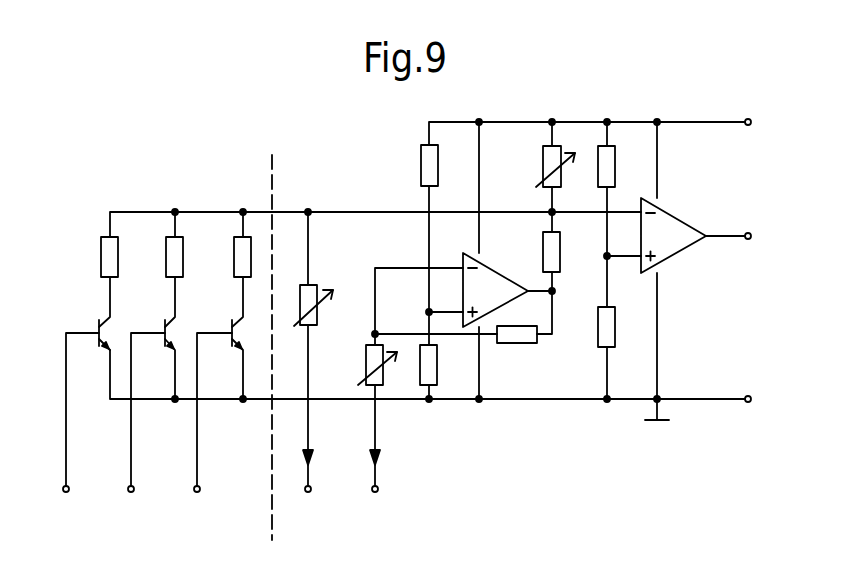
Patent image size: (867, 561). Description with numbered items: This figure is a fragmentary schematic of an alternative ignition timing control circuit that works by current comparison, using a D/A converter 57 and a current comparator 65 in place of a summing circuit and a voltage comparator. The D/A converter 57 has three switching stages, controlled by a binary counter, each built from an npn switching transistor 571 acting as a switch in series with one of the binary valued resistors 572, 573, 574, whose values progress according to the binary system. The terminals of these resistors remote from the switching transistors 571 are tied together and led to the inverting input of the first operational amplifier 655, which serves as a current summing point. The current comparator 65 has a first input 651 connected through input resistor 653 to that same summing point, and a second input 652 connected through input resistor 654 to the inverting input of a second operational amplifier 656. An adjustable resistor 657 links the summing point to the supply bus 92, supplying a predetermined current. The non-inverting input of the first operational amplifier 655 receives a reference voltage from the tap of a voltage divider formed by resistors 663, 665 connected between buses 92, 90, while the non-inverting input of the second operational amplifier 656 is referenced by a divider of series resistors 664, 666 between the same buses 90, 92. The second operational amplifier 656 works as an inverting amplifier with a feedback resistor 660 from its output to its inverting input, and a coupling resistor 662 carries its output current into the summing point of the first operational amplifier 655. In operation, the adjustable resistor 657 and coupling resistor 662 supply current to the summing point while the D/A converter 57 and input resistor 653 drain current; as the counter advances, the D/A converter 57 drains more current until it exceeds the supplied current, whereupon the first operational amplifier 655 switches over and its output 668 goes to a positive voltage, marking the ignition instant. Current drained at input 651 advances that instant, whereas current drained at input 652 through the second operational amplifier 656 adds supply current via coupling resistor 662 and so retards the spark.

The D/A converter 57 is at (165, 381).
The switching transistor 571 is at (92, 322).
The binary valued resistor 572 is at (101, 252).
The binary valued resistor 573 is at (166, 252).
The binary valued resistor 574 is at (234, 252).
The current comparator 65 is at (522, 328).
The first input 651 is at (310, 493).
The second input 652 is at (377, 493).
The input resistor 653 is at (311, 289).
The input resistor 654 is at (366, 353).
The first operational amplifier 655 is at (673, 246).
The second operational amplifier 656 is at (509, 275).
The adjustable resistor 657 is at (543, 165).
The feedback resistor 660 is at (522, 343).
The coupling resistor 662 is at (559, 257).
The resistor 663 is at (612, 168).
The resistor 664 is at (421, 162).
The resistor 665 is at (616, 331).
The resistor 666 is at (437, 359).
The output 668 is at (747, 233).
The bus 90 is at (553, 401).
The supply bus 92 is at (682, 122).